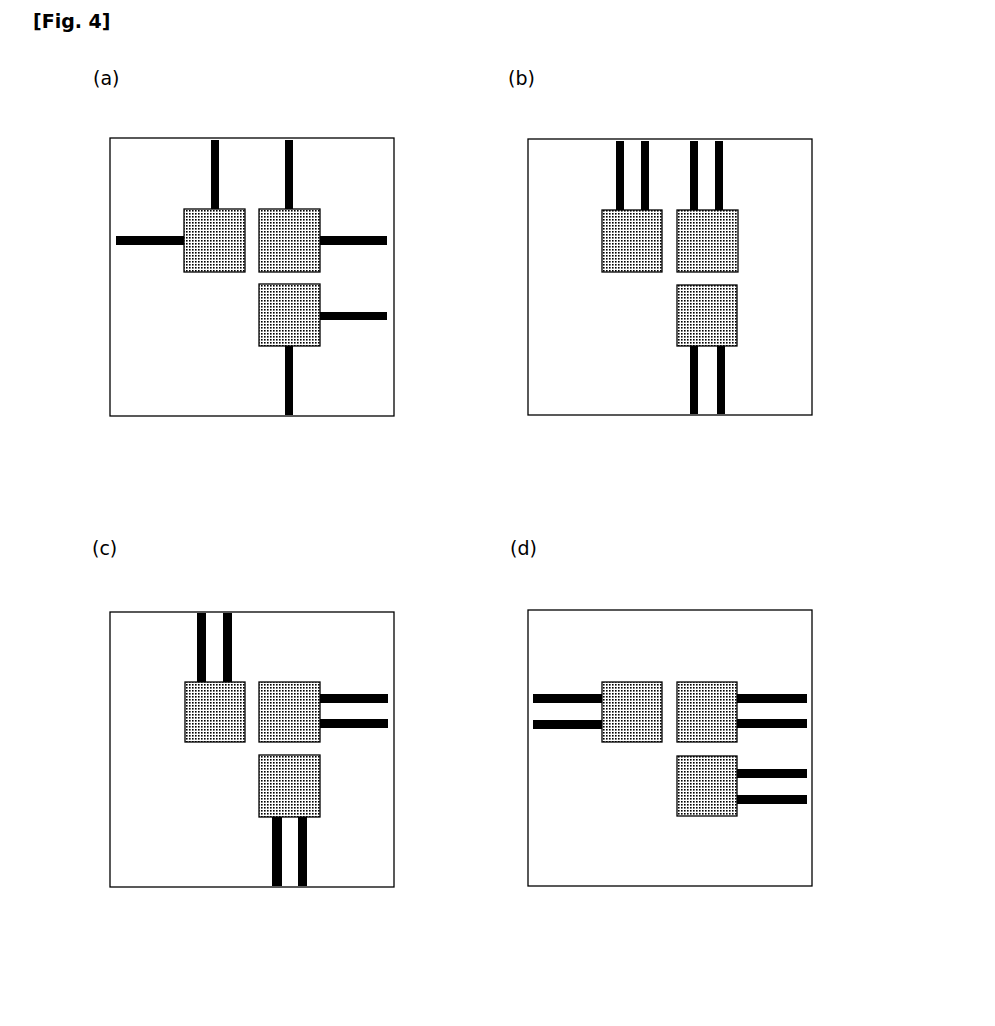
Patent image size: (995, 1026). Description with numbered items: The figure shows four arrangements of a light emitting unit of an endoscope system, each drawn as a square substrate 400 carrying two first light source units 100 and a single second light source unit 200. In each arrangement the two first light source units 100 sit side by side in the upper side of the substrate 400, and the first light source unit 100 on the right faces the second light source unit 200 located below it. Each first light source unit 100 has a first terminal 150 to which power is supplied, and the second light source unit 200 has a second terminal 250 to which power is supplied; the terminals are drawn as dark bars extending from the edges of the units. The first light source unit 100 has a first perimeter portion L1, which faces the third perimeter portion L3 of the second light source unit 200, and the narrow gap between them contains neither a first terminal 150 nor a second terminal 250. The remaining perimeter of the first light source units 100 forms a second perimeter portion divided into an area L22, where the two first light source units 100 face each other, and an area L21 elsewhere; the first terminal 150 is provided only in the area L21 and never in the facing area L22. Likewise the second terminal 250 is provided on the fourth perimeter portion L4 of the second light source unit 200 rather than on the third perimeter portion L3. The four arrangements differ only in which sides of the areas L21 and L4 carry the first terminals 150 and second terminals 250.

The first light source unit 100 is at (270, 209).
The first terminal 150 is at (150, 236).
The second light source unit 200 is at (320, 336).
The second terminal 250 is at (377, 318).
The substrate 400 is at (370, 138).
The first perimeter portion L1 is at (287, 277).
The third perimeter portion L3 is at (247, 254).
The fourth perimeter portion L4 is at (320, 305).
The second perimeter portion area where first terminal is provided L21 is at (231, 209).
The second perimeter portion area where first light source units face each other L22 is at (672, 923).